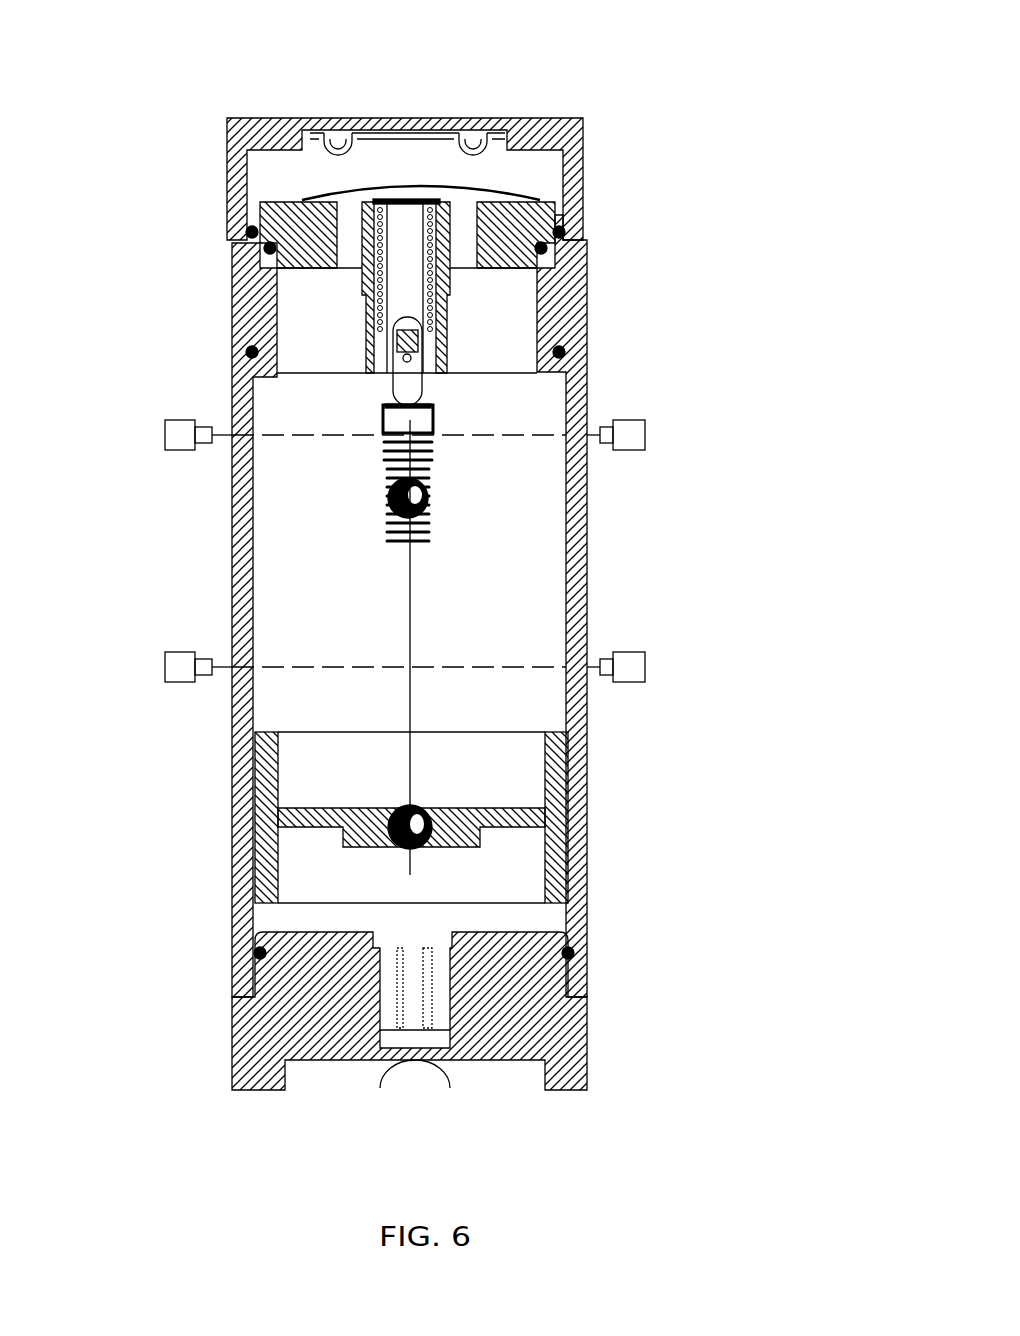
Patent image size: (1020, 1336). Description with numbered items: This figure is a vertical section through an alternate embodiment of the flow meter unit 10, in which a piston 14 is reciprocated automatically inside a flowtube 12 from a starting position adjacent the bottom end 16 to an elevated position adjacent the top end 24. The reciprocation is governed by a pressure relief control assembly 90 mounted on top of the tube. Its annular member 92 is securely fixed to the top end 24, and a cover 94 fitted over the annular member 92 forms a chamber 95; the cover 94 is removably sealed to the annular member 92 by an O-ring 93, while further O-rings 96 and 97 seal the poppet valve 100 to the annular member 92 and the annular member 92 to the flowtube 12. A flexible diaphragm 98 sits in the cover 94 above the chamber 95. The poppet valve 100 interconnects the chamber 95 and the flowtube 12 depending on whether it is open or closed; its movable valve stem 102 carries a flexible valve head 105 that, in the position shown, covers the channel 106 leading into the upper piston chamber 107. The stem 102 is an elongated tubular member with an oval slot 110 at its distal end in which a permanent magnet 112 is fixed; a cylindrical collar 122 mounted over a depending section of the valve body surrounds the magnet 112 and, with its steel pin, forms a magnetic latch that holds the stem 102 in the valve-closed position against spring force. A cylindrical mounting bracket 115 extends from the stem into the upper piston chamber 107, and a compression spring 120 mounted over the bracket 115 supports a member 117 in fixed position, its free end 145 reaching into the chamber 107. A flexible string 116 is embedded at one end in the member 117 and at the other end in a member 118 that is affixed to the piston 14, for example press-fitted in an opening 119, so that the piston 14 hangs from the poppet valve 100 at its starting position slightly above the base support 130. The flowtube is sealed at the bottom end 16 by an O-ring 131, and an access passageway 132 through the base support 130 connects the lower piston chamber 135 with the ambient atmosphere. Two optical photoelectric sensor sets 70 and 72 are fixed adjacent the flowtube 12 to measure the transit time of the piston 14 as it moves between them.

The unit 10 is at (792, 440).
The flowtube 12 is at (587, 400).
The piston 14 is at (433, 820).
The bottom end 16 is at (588, 985).
The top end 24 is at (567, 338).
The sensor elements 70 is at (163, 432).
The sensor elements 72 is at (163, 664).
The pressure relief control assembly 90 is at (648, 186).
The annular member 92 is at (263, 297).
The O-ring 93 is at (247, 230).
The cover 94 is at (583, 138).
The chamber 95 is at (268, 170).
The O-ring 96 is at (264, 246).
The O-ring 97 is at (562, 352).
The flexible diaphragm 98 is at (440, 137).
The poppet valve 100 is at (527, 165).
The valve stem 102 is at (408, 222).
The flexible valve head 105 is at (407, 192).
The channel 106 is at (347, 223).
The upper piston chamber 107 is at (320, 525).
The oval slot 110 is at (405, 387).
The permanent magnet 112 is at (382, 338).
The mounting bracket 115 is at (383, 412).
The flexible string 116 is at (410, 638).
The member 117 is at (435, 498).
The member 118 is at (545, 808).
The opening 119 is at (392, 808).
The compression spring 120 is at (435, 530).
The cylindrical collar 122 is at (450, 347).
The base support 130 is at (575, 1052).
The O-ring 131 is at (572, 950).
The access passageway 132 is at (412, 1037).
The lower piston chamber 135 is at (515, 880).
The free end 145 is at (397, 551).